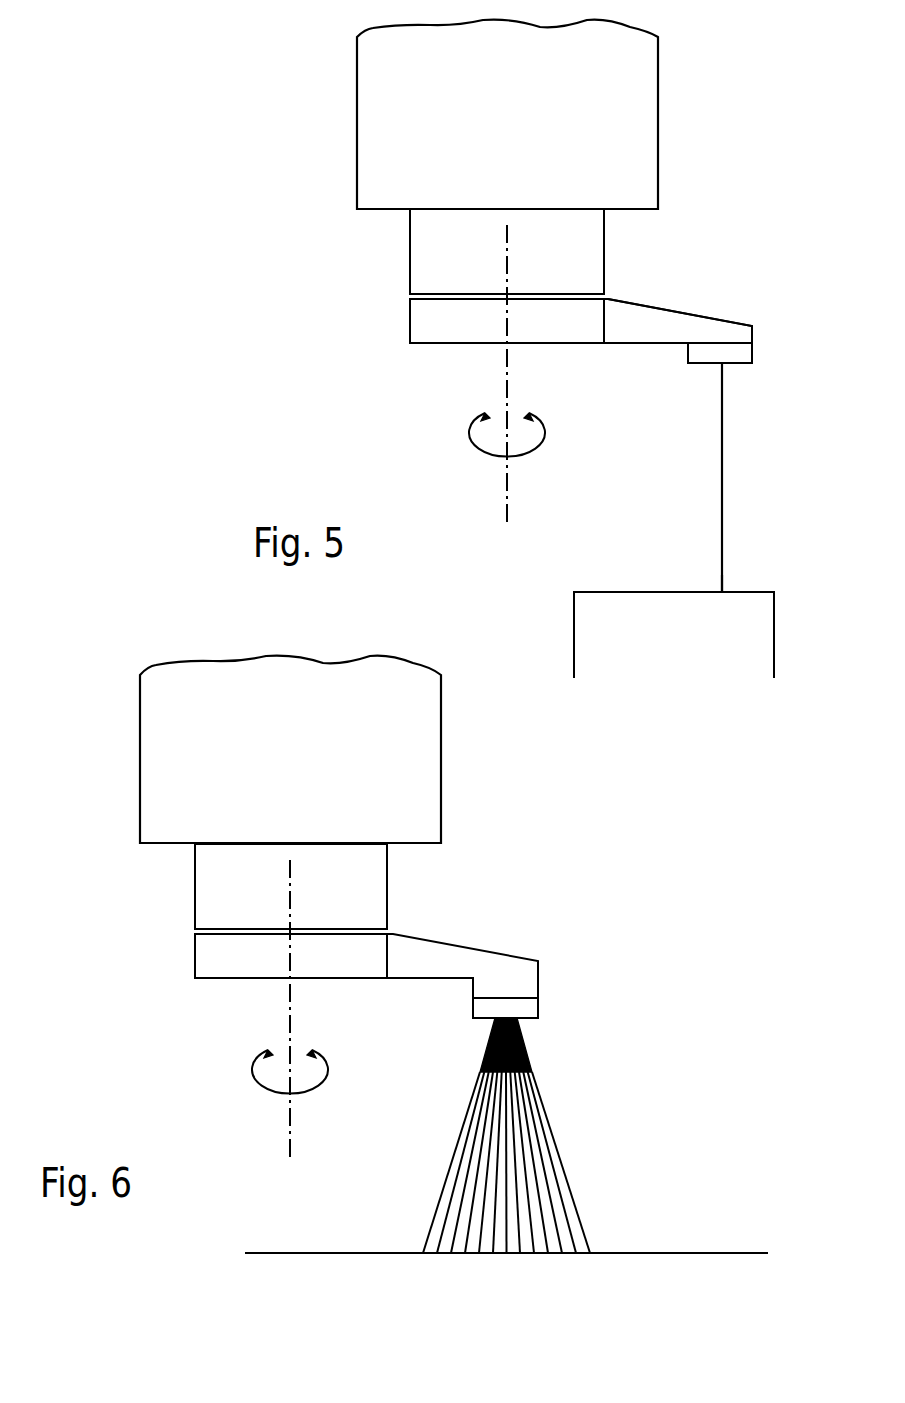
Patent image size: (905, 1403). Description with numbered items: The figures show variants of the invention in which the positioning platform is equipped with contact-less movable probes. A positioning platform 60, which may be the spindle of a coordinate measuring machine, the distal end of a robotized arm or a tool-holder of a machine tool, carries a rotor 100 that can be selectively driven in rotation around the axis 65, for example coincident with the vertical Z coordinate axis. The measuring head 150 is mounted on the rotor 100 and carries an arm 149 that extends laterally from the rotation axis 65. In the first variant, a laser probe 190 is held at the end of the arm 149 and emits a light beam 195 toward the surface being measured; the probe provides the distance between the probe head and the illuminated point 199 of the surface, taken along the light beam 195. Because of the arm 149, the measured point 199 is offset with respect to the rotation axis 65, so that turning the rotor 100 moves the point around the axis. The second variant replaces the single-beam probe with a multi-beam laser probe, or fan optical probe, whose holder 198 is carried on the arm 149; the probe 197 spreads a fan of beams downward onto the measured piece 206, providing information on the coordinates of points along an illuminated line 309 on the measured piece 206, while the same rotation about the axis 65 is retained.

In FIG. 5, the positioning platform 60 is at (373, 160).
In FIG. 6, the positioning platform 60 is at (157, 795).
In FIG. 5, the rotor 100 is at (432, 264).
In FIG. 6, the rotor 100 is at (217, 898).
In FIG. 5, the measuring head 150 is at (440, 323).
In FIG. 6, the measuring head 150 is at (225, 957).
In FIG. 5, the arm 149 is at (708, 330).
In FIG. 5, the laser probe 190 is at (740, 355).
In FIG. 5, the light beam 195 is at (723, 437).
In FIG. 5, the illuminated point 199 is at (722, 592).
In FIG. 5, the measured piece 206 is at (757, 655).
In FIG. 6, the measured piece 206 is at (743, 1253).
In FIG. 5, the axis 65 is at (507, 503).
In FIG. 6, the axis 65 is at (290, 1140).
In FIG. 6, the nozzle holder 198 is at (517, 1005).
In FIG. 6, the spray nozzle / spray cone 197 is at (532, 1073).
In FIG. 6, the illuminated line 309 is at (570, 1252).